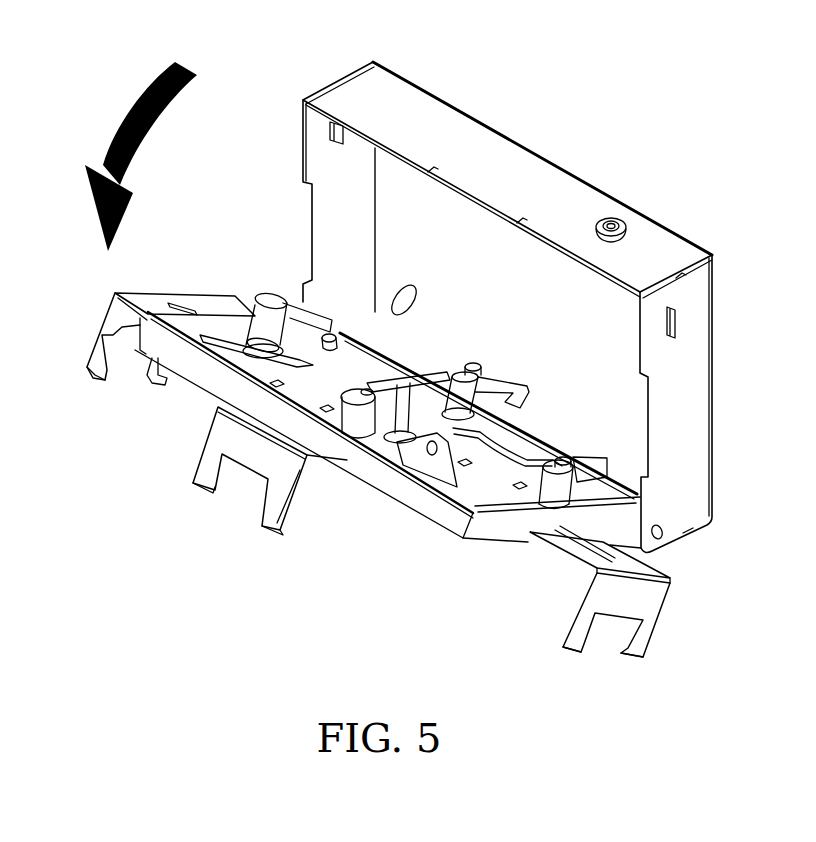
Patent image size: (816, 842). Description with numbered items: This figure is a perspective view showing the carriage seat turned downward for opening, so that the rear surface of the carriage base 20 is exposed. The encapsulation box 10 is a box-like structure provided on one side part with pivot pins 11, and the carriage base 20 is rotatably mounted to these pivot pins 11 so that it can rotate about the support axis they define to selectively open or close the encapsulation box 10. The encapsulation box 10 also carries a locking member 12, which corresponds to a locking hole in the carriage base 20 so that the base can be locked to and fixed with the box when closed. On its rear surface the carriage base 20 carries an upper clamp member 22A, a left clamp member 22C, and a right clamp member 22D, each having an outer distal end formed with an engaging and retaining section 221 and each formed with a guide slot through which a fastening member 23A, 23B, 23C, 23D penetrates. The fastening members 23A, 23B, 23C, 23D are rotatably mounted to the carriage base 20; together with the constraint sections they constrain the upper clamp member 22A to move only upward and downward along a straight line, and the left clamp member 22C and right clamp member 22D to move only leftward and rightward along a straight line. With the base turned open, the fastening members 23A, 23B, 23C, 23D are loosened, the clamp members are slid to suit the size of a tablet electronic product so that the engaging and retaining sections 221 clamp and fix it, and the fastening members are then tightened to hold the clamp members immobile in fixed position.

The encapsulation box 10 is at (418, 102).
The pivot pins 11 is at (329, 334).
The locking member 12 is at (610, 222).
The carriage base 20 is at (433, 508).
The upper clamp member 22A is at (317, 455).
The left clamp member 22C is at (195, 300).
The right clamp member 22D is at (560, 557).
The engaging and retaining section 221 is at (98, 335).
The fastening member 23A is at (382, 388).
The fastening member 23B is at (473, 363).
The fastening member 23C is at (271, 295).
The fastening member 23D is at (585, 455).